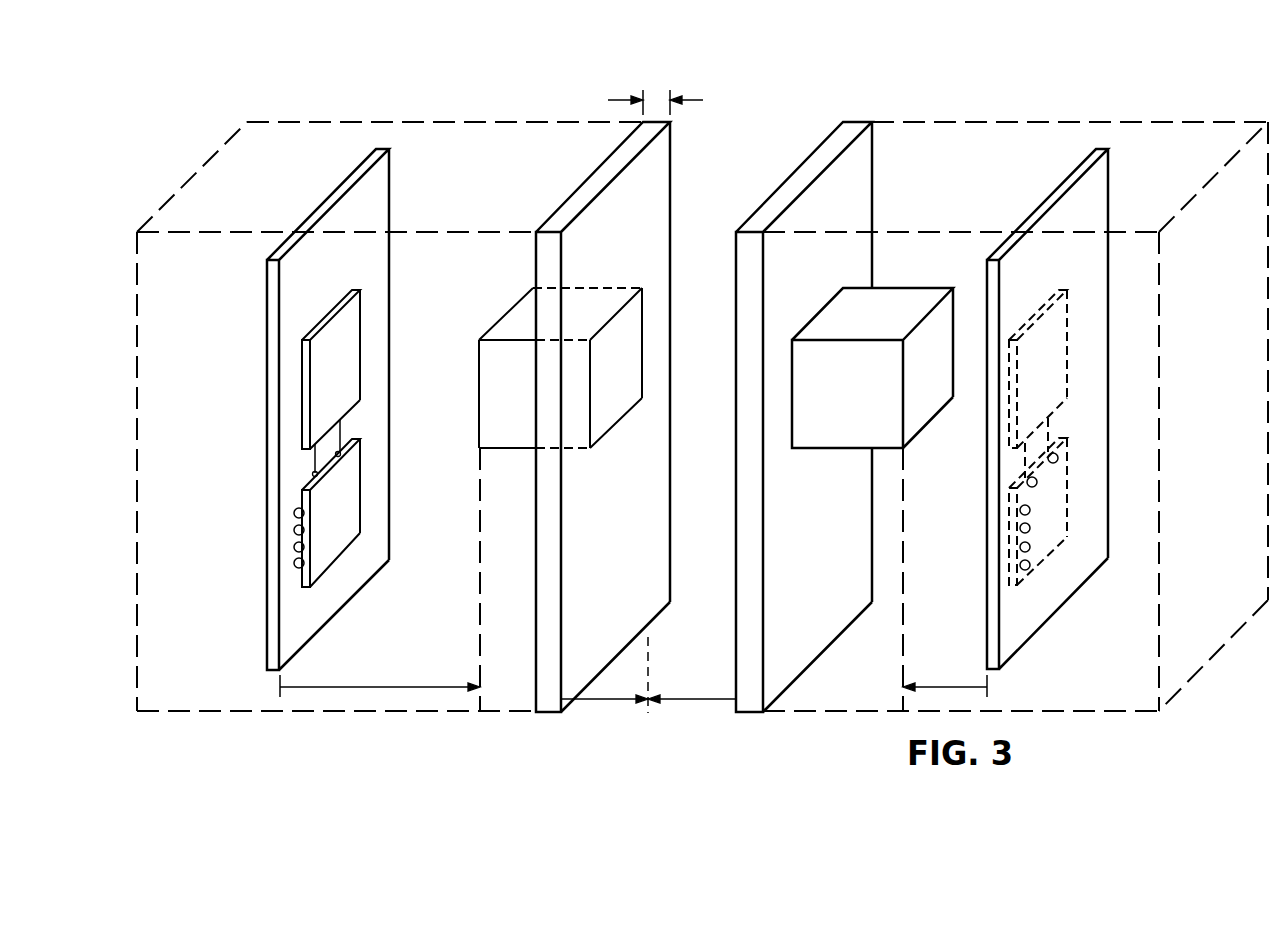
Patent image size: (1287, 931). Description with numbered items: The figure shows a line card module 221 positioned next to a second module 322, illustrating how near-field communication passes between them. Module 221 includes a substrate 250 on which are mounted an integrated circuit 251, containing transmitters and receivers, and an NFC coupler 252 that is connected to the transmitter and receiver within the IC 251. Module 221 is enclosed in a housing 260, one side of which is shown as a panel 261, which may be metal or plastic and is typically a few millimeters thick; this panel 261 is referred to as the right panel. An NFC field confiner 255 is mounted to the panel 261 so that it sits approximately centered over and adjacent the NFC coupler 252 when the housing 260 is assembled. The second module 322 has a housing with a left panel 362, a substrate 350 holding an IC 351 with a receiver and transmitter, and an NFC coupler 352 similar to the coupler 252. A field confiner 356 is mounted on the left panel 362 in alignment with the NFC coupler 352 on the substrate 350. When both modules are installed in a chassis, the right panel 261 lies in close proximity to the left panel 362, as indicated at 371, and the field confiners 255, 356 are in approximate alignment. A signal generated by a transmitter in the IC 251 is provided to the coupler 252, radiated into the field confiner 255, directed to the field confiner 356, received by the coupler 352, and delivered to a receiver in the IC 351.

The line card module 221 is at (345, 112).
The housing 260 is at (445, 121).
The panel 261 is at (662, 185).
The substrate 250 is at (380, 210).
The NFC coupler 252 is at (348, 332).
The integrated circuit 251 is at (348, 503).
The NFC field confiner 255 is at (618, 402).
The close proximity 371 is at (647, 715).
The second module 322 is at (1077, 112).
The panel 362 is at (863, 192).
The field confiner 356 is at (930, 402).
The substrate 350 is at (1097, 328).
The NFC coupler 352 is at (1053, 360).
The integrated circuit 351 is at (1050, 535).